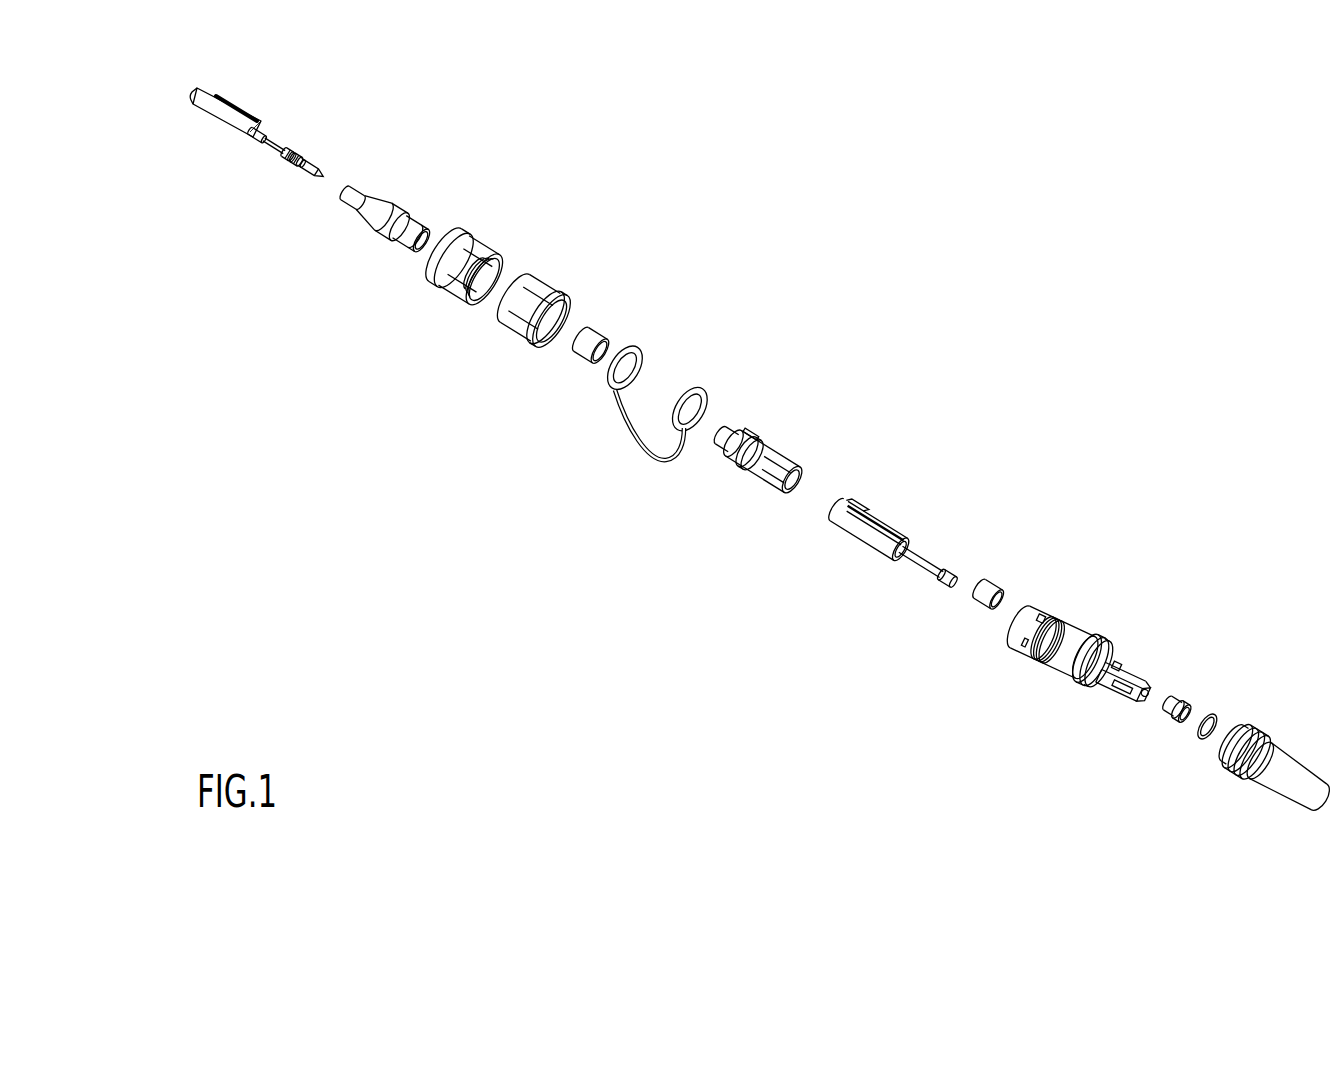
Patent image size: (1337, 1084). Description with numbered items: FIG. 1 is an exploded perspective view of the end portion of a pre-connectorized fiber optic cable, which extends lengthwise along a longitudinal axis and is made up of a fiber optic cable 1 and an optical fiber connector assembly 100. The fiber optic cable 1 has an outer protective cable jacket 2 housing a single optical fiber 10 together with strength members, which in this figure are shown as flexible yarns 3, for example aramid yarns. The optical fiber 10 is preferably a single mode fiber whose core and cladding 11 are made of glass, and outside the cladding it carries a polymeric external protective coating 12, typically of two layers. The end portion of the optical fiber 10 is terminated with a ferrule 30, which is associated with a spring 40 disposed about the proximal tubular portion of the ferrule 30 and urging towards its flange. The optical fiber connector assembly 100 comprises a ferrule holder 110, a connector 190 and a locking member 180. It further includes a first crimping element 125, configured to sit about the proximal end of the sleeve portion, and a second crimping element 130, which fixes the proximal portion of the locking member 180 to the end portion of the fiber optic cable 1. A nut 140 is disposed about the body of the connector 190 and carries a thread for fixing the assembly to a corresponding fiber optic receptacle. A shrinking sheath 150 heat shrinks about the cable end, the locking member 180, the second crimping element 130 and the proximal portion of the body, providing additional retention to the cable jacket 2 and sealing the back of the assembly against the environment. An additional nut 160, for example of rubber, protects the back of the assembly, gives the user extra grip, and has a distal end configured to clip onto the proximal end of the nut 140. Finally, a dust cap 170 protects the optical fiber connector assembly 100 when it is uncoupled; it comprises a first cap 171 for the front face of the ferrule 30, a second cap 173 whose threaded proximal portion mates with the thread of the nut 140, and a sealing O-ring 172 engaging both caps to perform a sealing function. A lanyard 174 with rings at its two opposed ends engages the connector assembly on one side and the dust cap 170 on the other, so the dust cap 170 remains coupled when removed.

The fiber optic cable 1 is at (185, 180).
The cable jacket 2 is at (203, 97).
The flexible yarns 3 is at (238, 105).
The optical fiber 10 is at (321, 151).
The core and cladding 11 is at (273, 142).
The external protective coating 12 is at (265, 133).
The ferrule 30 is at (335, 154).
The spring 40 is at (297, 153).
The optical fiber connector assembly 100 is at (1106, 741).
The ferrule holder 110 is at (910, 497).
The first crimping element 125 is at (988, 582).
The second crimping element 130 is at (588, 333).
The nut 140 is at (532, 293).
The shrinking sheath 150 is at (390, 207).
The additional nut 160 is at (463, 253).
The dust cap 170 is at (1237, 825).
The first cap 171 is at (1187, 702).
The sealing O-ring 172 is at (1207, 717).
The second cap 173 is at (1287, 773).
The lanyard 174 is at (701, 387).
The locking member 180 is at (784, 430).
The connector 190 is at (1100, 614).